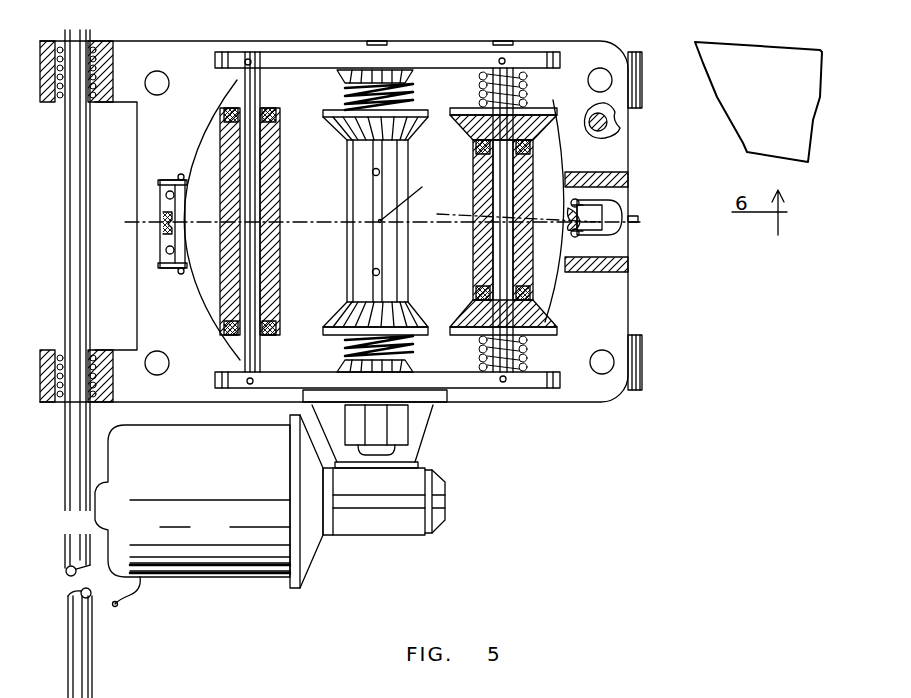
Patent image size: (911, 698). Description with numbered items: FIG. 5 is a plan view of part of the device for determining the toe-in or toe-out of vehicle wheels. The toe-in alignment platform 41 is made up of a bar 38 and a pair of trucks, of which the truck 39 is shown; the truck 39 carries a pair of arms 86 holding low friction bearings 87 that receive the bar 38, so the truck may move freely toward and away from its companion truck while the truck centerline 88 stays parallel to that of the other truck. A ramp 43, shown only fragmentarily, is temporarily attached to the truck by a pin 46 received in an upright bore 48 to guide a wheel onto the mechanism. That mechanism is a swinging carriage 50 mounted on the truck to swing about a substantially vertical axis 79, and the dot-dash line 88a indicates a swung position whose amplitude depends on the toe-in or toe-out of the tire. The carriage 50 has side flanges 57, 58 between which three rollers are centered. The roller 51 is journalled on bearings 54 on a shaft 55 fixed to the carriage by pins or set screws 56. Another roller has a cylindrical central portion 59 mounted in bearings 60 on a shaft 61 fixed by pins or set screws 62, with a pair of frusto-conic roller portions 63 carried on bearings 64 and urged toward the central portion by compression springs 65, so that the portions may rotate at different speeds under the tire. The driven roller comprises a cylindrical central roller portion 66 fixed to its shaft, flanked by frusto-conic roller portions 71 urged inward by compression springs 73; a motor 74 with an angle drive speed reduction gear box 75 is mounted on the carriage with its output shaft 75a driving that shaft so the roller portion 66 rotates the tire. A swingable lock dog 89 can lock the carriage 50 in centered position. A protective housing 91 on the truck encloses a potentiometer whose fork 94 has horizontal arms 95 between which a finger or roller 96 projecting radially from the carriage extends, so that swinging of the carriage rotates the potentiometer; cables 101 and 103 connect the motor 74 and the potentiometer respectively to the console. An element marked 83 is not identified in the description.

The bar 38 is at (78, 364).
The truck 39 is at (628, 320).
The toe-in alignment platform 41 is at (500, 533).
The ramp 43 is at (784, 102).
The pin 46 is at (612, 108).
The upright bore 48 is at (615, 128).
The swinging carriage 50 is at (320, 167).
The roller 51 is at (222, 196).
The bearings 54 is at (237, 108).
The shaft 55 is at (240, 82).
The pins or set screws 56 is at (243, 63).
The side flange 57 is at (387, 61).
The side flange 58 is at (387, 379).
The cylindrical central roller portion 59 is at (532, 210).
The bearings 60 is at (475, 148).
The shaft 61 is at (490, 75).
The pins or set screws 62 is at (499, 61).
The frusto-conic roller portions 63 is at (470, 118).
The bearings 64 is at (522, 140).
The compression springs 65 is at (478, 100).
The cylindrical central roller portion 66 is at (350, 180).
The frusto-conic roller portions 71 is at (330, 118).
The compression springs 73 is at (350, 90).
The motor 74 is at (226, 535).
The angle drive speed reduction gear box 75 is at (406, 528).
The output shaft 75a is at (385, 425).
The vertical axis 79 is at (414, 198).
The mounting hole 83 is at (160, 95).
The arms 86 is at (124, 95).
The low friction bearings 87 is at (100, 100).
The truck centerline 88 is at (304, 224).
The dot-dash swung position line 88a is at (437, 214).
The swingable lock dog 89 is at (160, 197).
The protective housing 91 is at (628, 172).
The fork 94 is at (605, 210).
The horizontal arms 95 is at (578, 203).
The finger or roller 96 is at (572, 232).
The cable 101 is at (128, 596).
The cable 103 is at (638, 216).